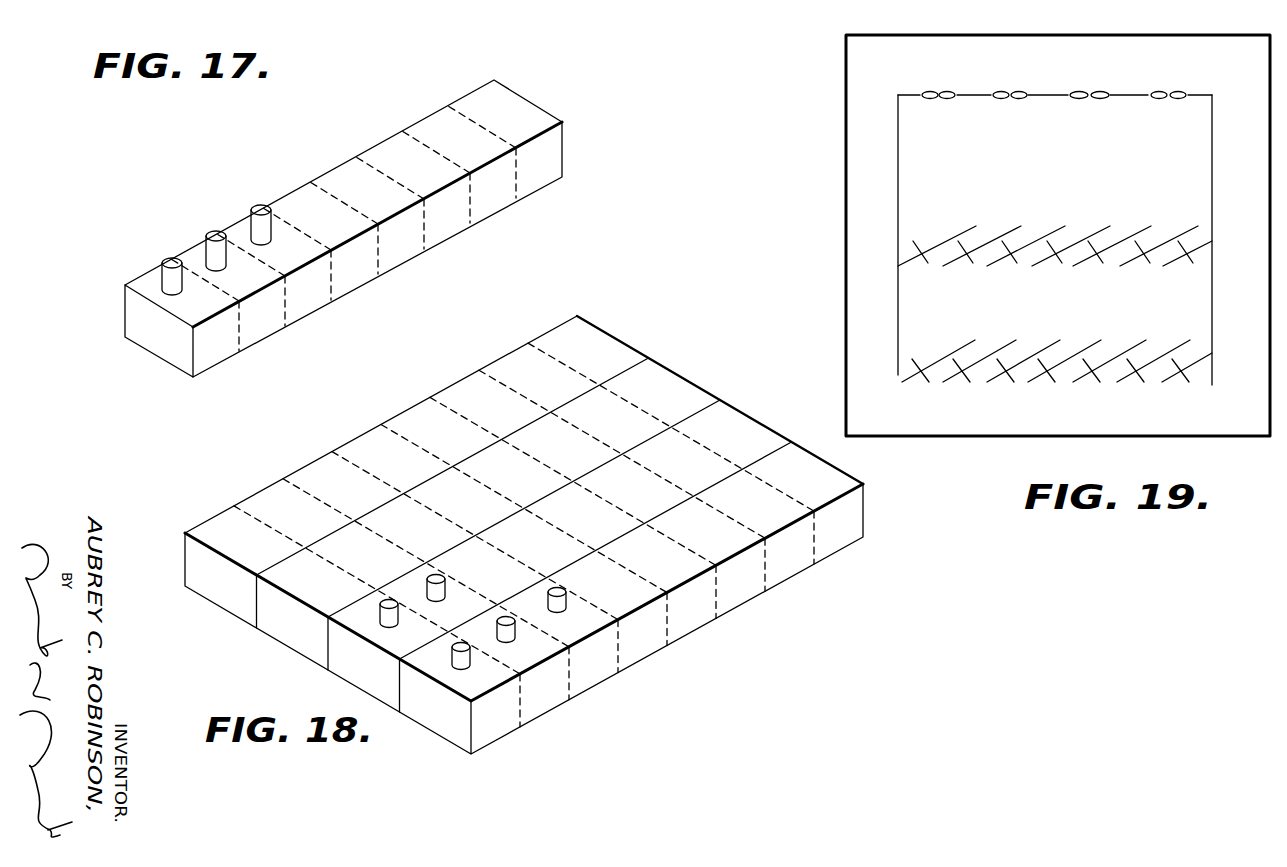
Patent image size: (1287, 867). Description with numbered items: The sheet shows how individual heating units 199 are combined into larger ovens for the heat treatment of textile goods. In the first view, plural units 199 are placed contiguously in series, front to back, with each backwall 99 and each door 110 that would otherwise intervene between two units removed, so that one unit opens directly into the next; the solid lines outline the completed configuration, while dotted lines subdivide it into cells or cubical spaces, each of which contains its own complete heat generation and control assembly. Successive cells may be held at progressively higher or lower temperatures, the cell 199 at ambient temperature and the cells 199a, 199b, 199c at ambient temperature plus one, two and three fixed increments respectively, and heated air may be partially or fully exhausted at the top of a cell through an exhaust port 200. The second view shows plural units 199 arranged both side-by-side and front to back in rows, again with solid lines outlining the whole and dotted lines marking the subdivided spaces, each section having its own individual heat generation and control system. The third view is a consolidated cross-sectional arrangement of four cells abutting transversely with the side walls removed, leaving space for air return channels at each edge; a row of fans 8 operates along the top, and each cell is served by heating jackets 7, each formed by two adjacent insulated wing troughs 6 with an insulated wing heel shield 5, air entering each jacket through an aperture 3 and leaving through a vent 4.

In FIG. 17, the door 110 is at (124, 333).
In FIG. 18, the door 110 is at (183, 563).
In FIG. 17, the unit 199 is at (220, 355).
In FIG. 18, the unit 199 is at (212, 518).
In FIG. 17, the cell 199a is at (264, 332).
In FIG. 18, the cell 199a is at (266, 488).
In FIG. 17, the cell 199b is at (315, 304).
In FIG. 18, the cell 199b is at (322, 457).
In FIG. 17, the cell 199c is at (359, 280).
In FIG. 18, the cell 199c is at (750, 608).
In FIG. 17, the exhaust port 200 is at (258, 205).
In FIG. 18, the exhaust port 200 is at (390, 627).
In FIG. 19, the backwall 99 is at (1022, 36).
In FIG. 19, the fan 8 is at (1003, 98).
In FIG. 19, the insulated wing heel shield 5 is at (935, 232).
In FIG. 19, the vent 4 is at (982, 232).
In FIG. 19, the insulated wing trough 6 is at (917, 262).
In FIG. 19, the aperture 3 is at (972, 258).
In FIG. 19, the jacket enclosure 7 is at (1028, 255).